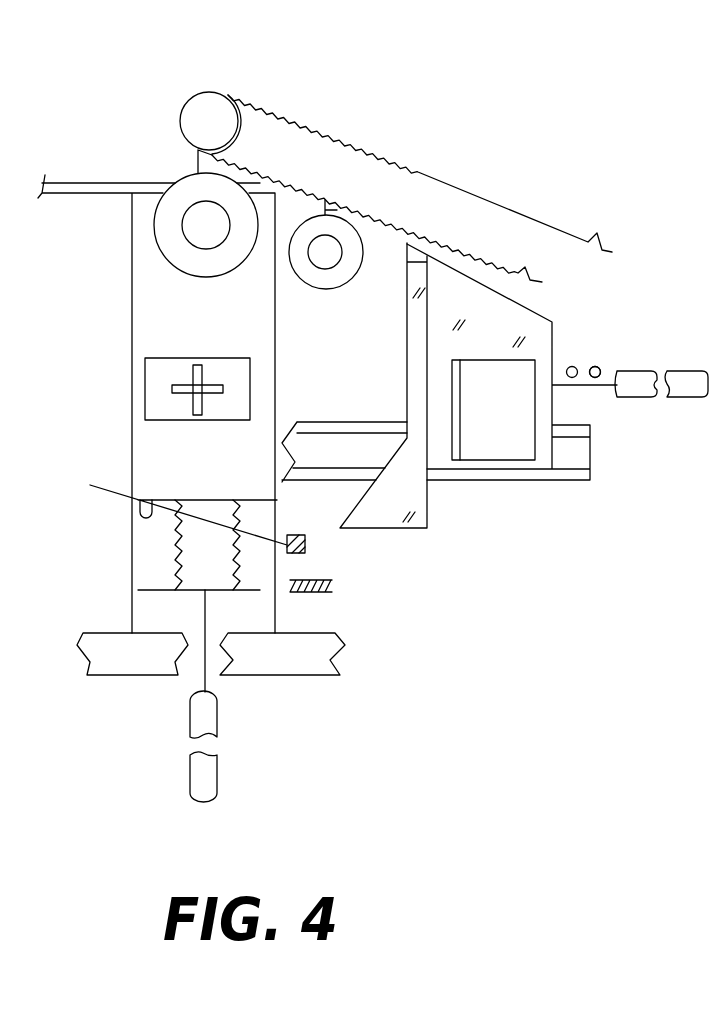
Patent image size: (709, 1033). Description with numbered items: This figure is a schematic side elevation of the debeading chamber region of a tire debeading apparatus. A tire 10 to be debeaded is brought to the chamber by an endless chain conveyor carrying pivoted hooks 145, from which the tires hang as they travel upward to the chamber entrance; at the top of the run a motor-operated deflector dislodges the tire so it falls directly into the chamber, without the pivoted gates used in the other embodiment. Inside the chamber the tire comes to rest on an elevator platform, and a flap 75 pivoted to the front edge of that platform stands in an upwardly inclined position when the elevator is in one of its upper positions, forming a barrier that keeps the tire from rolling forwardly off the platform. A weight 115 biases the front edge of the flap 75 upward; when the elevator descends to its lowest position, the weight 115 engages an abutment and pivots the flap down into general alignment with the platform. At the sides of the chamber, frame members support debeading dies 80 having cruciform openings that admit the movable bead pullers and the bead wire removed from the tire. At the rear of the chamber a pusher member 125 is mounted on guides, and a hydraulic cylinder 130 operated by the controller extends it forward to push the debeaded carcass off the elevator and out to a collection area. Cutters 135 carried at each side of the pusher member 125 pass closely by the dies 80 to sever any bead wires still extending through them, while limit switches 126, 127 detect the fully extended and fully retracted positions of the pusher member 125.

The tire 10 is at (325, 273).
The flap 75 is at (116, 505).
The debeading die 80 is at (157, 380).
The weight 115 is at (307, 543).
The pusher member 125 is at (540, 335).
The limit switch 126 is at (577, 367).
The limit switch 127 is at (595, 378).
The hydraulic cylinder 130 is at (664, 364).
The cutter 135 is at (507, 447).
The pivoted hook 145 is at (210, 153).